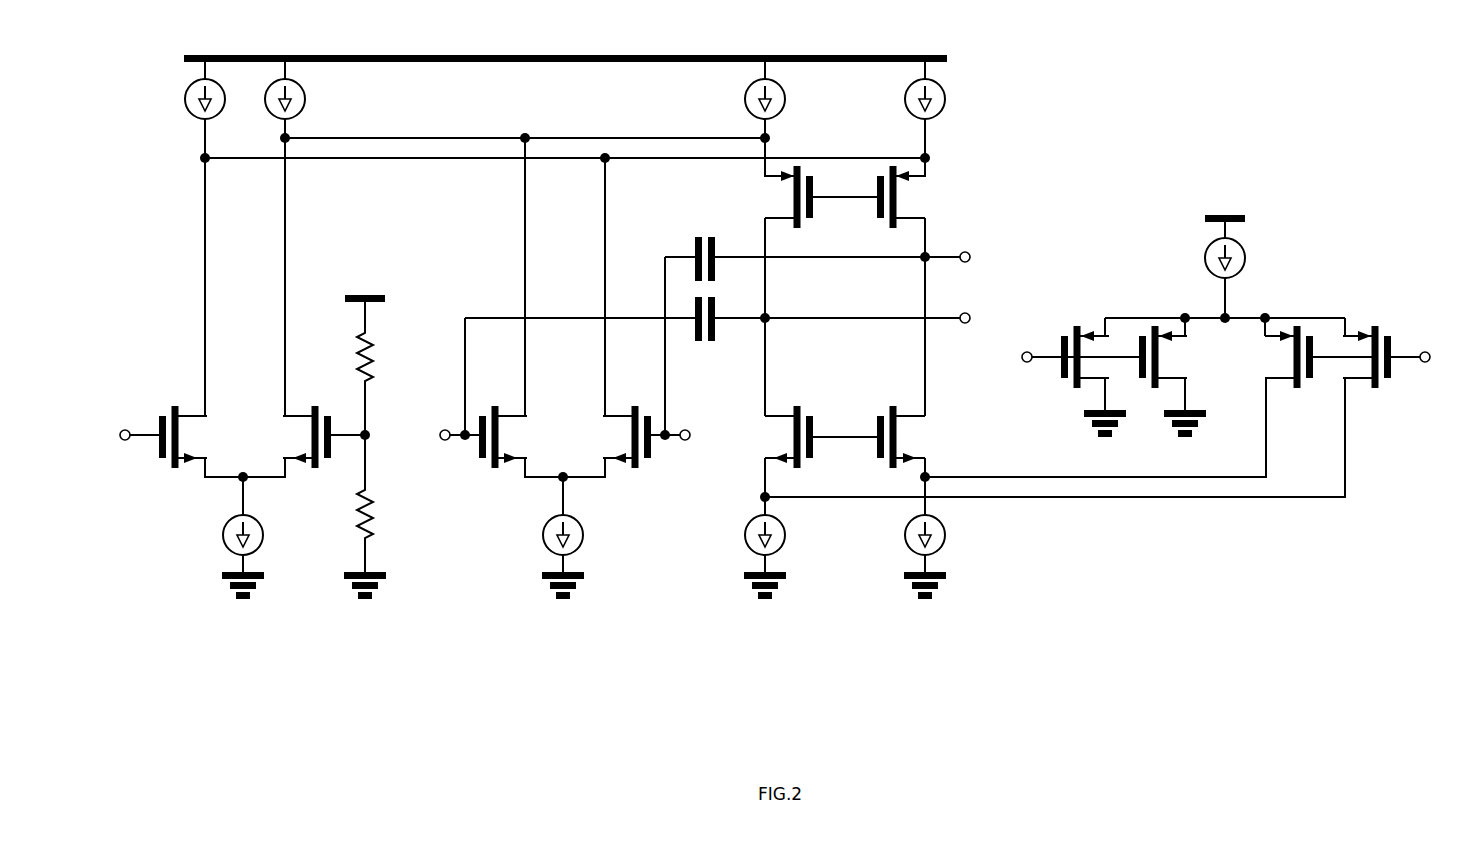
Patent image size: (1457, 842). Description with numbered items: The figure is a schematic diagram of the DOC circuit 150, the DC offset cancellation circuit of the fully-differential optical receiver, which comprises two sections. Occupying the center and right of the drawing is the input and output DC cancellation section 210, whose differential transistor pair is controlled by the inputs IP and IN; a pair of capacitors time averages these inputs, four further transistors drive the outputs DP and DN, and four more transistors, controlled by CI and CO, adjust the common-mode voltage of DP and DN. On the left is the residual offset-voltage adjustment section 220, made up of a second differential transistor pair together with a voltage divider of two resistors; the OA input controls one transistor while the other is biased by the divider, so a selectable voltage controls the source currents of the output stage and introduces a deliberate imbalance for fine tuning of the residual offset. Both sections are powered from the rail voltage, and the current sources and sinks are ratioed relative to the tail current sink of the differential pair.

The DOC circuit 150 is at (1070, 167).
The input and output DC cancellation section 210 is at (1397, 637).
The residual offset-voltage adjustment section 220 is at (385, 637).